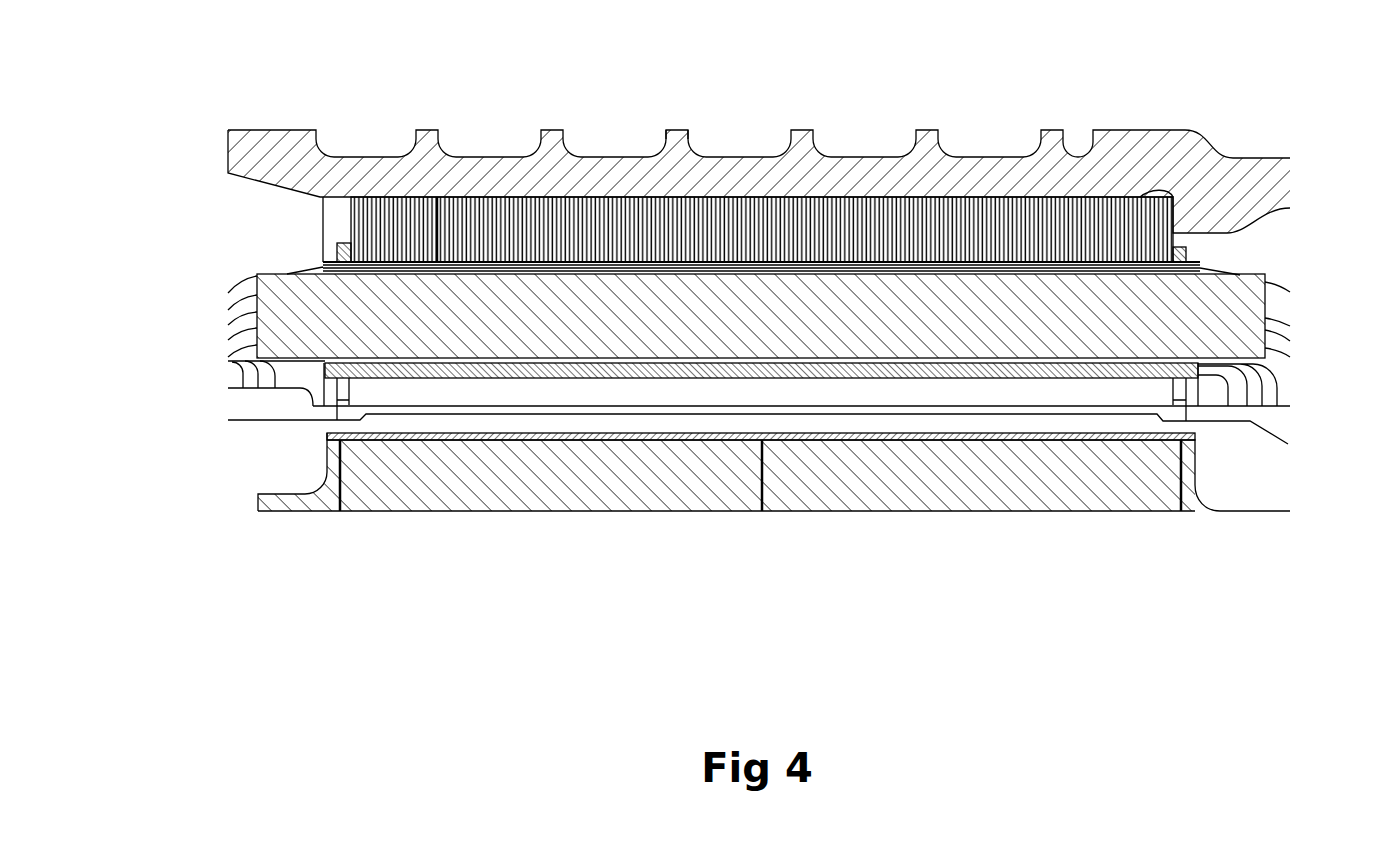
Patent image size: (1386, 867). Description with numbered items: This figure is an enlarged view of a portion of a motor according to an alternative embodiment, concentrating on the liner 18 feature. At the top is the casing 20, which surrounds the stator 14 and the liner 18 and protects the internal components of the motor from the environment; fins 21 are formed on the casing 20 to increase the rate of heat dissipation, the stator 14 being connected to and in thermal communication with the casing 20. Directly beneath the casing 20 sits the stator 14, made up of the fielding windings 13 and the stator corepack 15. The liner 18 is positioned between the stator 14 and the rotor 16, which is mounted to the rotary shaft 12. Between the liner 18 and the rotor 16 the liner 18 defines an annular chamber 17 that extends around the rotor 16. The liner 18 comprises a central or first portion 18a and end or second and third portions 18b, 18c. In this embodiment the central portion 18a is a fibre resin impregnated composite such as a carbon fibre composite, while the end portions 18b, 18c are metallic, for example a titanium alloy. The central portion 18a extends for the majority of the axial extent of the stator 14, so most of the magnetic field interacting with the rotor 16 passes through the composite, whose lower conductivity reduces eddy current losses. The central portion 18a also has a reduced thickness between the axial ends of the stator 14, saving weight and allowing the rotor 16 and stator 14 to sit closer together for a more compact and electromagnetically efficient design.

The rotary shaft 12 is at (323, 505).
The fielding windings 13 is at (232, 312).
The stator 14 is at (243, 256).
The stator corepack 15 is at (862, 224).
The rotor 16 is at (862, 480).
The chamber 17 is at (572, 423).
The liner 18 is at (237, 428).
The central portion of the liner 18a is at (641, 408).
The end portion of the liner 18b is at (277, 406).
The end portion of the liner 18c is at (1265, 418).
The casing 20 is at (1064, 168).
The fins 21 is at (678, 137).